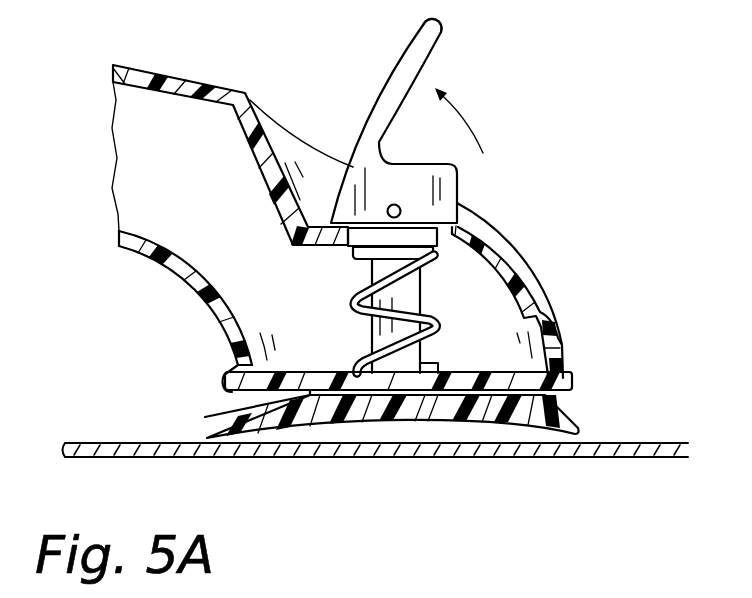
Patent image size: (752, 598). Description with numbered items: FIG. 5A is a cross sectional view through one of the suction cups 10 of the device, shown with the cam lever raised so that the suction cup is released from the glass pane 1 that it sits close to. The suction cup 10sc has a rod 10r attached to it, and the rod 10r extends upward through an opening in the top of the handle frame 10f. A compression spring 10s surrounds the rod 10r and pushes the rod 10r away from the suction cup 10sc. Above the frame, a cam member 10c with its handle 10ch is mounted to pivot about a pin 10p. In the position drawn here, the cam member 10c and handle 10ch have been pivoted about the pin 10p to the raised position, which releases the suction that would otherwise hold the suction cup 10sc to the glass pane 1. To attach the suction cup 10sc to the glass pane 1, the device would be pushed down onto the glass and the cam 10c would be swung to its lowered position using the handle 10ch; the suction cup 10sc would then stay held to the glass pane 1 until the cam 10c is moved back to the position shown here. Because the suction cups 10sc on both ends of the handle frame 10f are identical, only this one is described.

The glass pane 1 is at (603, 457).
The suction cup assembly 10 is at (527, 226).
The cam member 10c is at (353, 168).
The handle 10ch is at (428, 44).
The pin 10p is at (400, 208).
The rod 10r is at (420, 292).
The compression spring 10s is at (436, 325).
The handle frame 10f is at (565, 358).
The suction cup 10sc is at (568, 415).